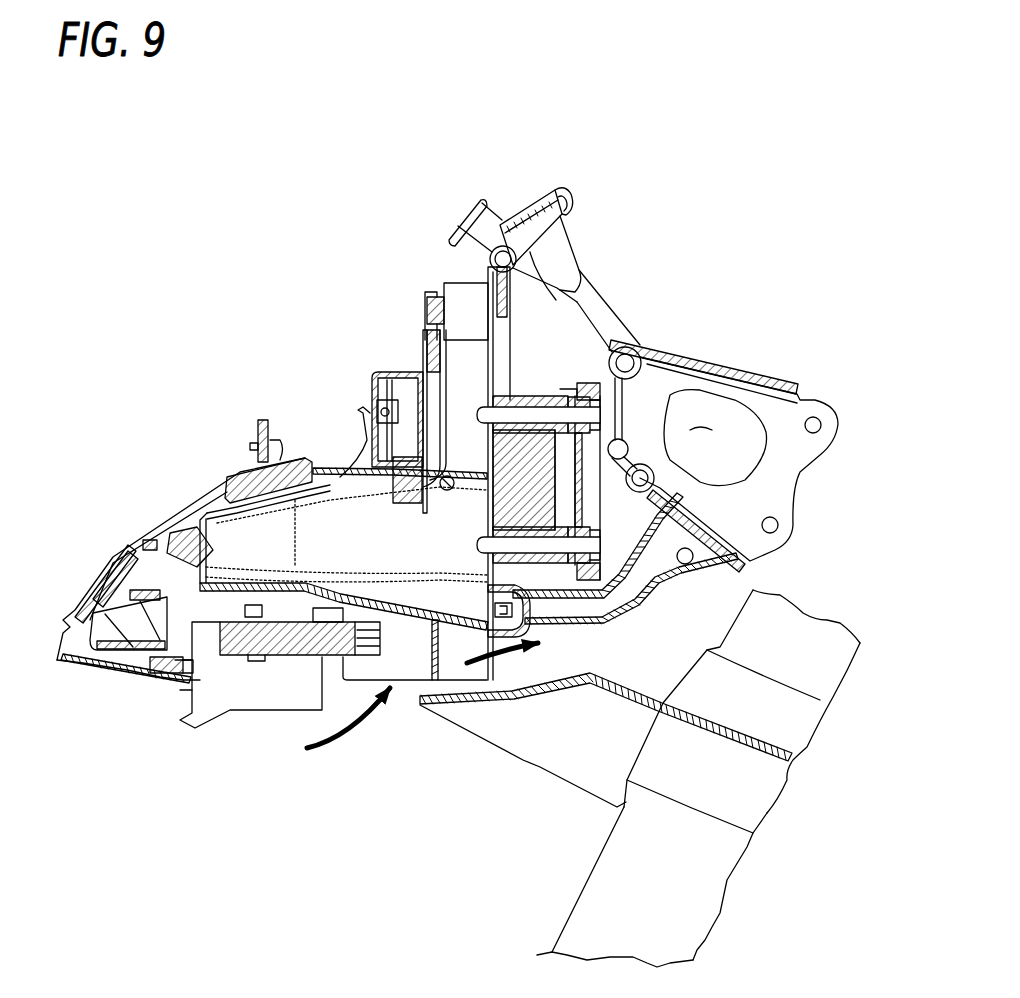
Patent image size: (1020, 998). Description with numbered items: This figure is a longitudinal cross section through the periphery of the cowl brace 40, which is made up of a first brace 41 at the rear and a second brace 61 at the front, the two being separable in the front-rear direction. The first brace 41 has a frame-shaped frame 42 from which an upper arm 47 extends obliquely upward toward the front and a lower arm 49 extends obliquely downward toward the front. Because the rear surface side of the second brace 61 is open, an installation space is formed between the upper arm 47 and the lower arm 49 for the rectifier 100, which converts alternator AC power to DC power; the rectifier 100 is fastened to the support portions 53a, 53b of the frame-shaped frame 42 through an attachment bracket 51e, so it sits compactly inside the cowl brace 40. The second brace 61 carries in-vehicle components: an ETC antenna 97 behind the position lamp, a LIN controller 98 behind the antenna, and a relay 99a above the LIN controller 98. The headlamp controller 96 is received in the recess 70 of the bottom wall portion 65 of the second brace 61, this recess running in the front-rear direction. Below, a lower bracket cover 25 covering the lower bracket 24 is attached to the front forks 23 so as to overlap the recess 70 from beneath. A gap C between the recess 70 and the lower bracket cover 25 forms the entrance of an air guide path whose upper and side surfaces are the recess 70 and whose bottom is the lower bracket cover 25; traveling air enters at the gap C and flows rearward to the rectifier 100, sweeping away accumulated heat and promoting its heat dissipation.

The cowl brace 40 is at (585, 160).
The first brace 41 is at (640, 287).
The frame-shaped frame 42 is at (727, 372).
The upper arm 47 is at (603, 303).
The support portion 53a is at (672, 402).
The support portion 53b is at (675, 462).
The second brace 61 is at (360, 322).
The relay 99a is at (452, 280).
The rectifier 100 is at (510, 392).
The attachment bracket 51e is at (538, 397).
The LIN controller 98 is at (373, 370).
The ETC antenna 97 is at (255, 470).
The headlamp controller 96 is at (275, 712).
The bottom wall portion 65 is at (373, 682).
The recess 70 is at (430, 665).
The gap C is at (437, 663).
The lower arm 49 is at (600, 640).
The lower bracket 24 is at (705, 695).
The lower bracket cover 25 is at (552, 702).
The front forks 23 is at (632, 847).